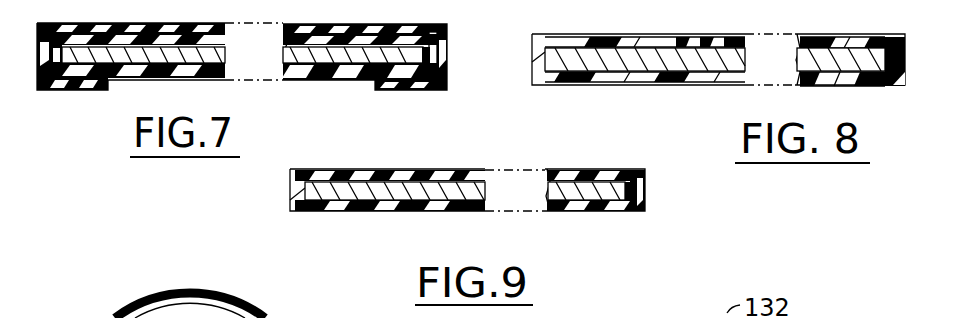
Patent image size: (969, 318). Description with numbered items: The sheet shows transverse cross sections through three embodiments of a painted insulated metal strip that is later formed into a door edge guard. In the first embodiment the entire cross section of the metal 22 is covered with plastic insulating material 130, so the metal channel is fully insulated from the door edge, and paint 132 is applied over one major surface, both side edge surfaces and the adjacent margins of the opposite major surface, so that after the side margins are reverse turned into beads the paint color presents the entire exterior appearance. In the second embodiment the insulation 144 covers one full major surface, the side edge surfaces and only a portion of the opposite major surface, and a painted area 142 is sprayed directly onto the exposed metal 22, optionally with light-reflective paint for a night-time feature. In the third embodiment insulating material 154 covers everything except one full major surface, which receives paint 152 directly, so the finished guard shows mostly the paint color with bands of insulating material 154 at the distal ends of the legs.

In FIG. 7, the metal 22 is at (207, 60).
In FIG. 8, the metal 22 is at (615, 62).
In FIG. 9, the metal 22 is at (365, 192).
In FIG. 7, the plastic insulating material 130 is at (305, 82).
In FIG. 7, the paint 132 is at (82, 90).
In FIG. 8, the painted area 142 is at (682, 42).
In FIG. 8, the wrapping tape 144 is at (650, 15).
In FIG. 9, the paint 152 is at (450, 177).
In FIG. 9, the insulating material 154 is at (593, 205).